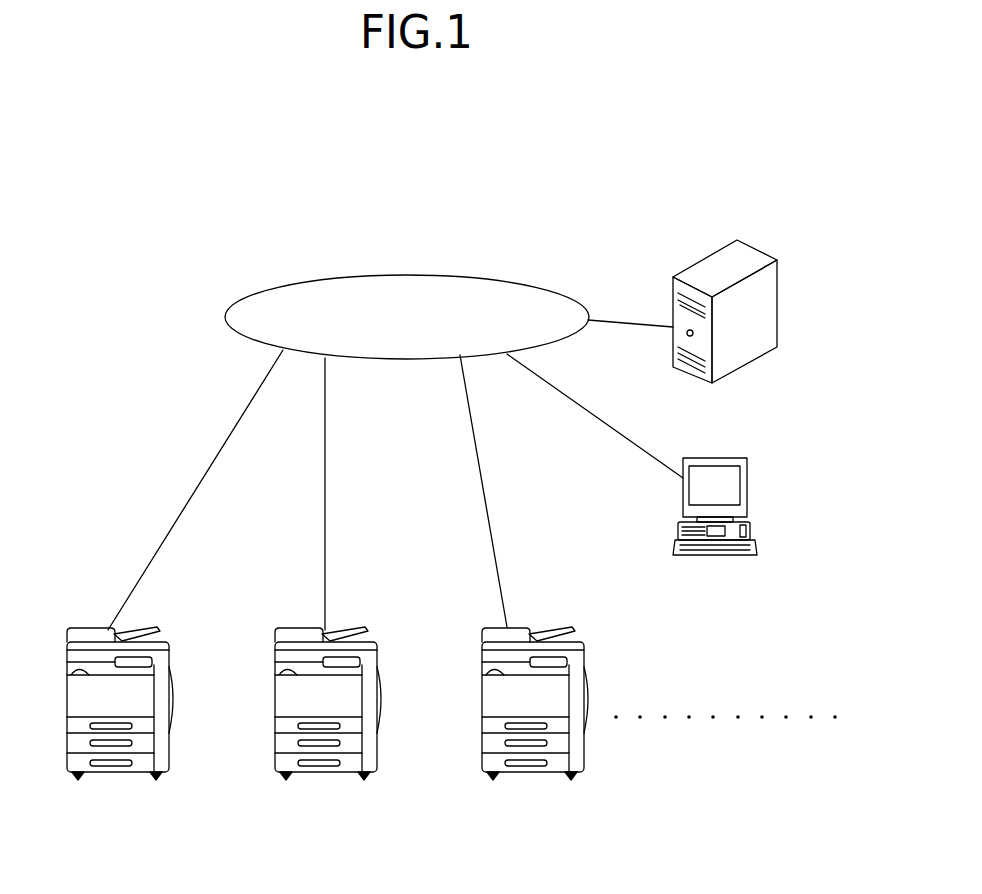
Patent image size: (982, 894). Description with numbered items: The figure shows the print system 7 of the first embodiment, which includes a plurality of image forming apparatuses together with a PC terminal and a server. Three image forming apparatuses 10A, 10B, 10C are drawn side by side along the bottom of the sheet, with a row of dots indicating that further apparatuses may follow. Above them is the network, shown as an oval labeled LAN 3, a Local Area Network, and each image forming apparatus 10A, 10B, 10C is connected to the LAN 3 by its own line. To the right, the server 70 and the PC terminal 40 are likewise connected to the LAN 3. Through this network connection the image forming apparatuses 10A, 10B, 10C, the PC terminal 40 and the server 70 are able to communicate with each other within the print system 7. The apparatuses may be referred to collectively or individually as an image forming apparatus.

The print system 7 is at (135, 270).
The LAN 3 is at (298, 283).
The image forming apparatus 10A is at (87, 630).
The image forming apparatus 10B is at (285, 630).
The image forming apparatus 10C is at (523, 626).
The PC terminal 40 is at (712, 456).
The server 70 is at (700, 258).